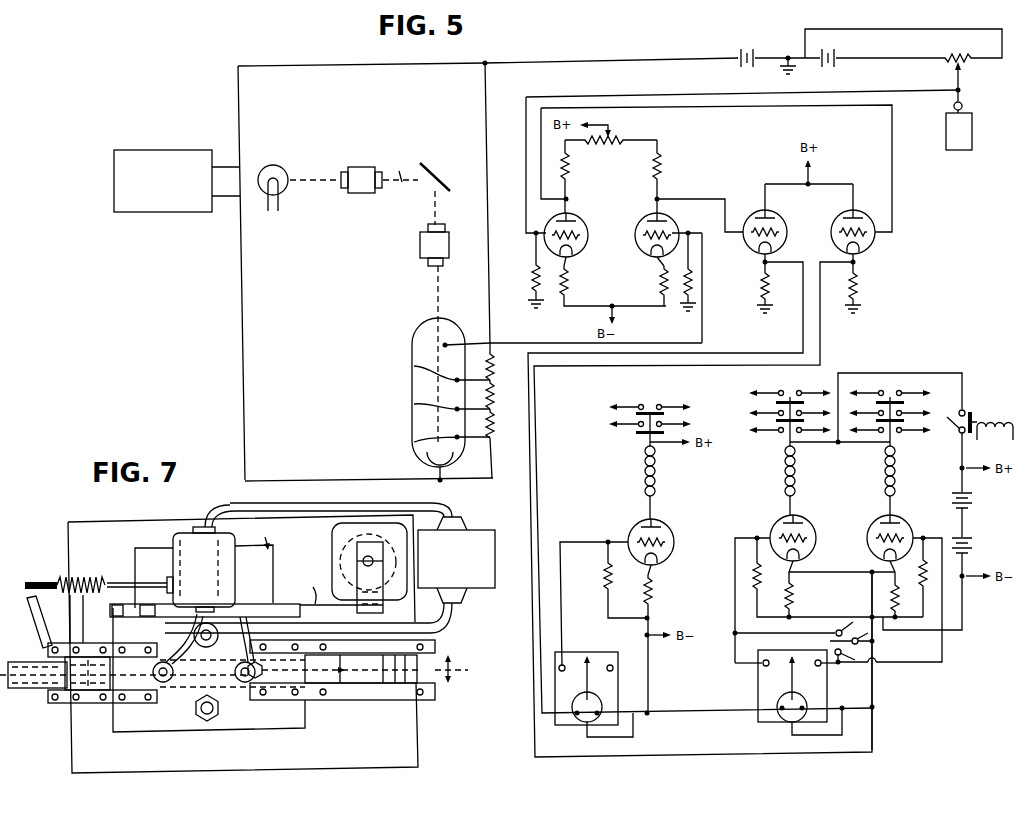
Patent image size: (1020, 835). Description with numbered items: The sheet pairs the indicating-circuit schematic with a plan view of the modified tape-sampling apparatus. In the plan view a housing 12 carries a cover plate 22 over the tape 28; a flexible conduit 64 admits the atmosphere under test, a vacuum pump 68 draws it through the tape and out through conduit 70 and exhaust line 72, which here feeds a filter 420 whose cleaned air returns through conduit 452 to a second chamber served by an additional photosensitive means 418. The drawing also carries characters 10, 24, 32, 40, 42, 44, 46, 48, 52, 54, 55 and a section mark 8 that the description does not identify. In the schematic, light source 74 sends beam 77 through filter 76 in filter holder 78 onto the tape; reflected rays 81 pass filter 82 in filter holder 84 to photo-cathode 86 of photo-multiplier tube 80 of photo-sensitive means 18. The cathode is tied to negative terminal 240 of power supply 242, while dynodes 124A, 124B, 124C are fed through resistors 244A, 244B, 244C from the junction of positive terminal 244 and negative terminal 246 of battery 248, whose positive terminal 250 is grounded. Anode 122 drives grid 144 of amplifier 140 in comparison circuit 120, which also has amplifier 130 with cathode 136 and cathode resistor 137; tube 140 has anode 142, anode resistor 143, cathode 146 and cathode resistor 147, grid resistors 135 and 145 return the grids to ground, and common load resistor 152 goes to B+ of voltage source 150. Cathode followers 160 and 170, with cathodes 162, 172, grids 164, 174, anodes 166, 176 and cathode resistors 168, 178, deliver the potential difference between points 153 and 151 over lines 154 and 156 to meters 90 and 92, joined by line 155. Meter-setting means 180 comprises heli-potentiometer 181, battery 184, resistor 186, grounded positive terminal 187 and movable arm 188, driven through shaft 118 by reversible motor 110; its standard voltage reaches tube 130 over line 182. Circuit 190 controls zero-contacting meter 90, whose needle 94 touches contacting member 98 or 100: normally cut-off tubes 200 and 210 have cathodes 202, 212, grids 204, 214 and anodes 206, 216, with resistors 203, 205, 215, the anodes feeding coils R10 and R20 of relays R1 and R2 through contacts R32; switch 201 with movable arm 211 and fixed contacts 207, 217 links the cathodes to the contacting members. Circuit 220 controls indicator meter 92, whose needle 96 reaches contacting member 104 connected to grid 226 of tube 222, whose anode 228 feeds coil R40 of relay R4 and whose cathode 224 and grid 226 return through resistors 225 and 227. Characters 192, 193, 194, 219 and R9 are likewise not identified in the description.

In FIG. 7, the apparatus 10 is at (66, 745).
In FIG. 7, the housing 12 is at (148, 733).
In FIG. 5, the photo-sensitive means 18 is at (412, 399).
In FIG. 7, the photo-sensitive means 18 is at (133, 563).
In FIG. 7, the cover plate 22 is at (240, 722).
In FIG. 7, the clamp plate 24 is at (430, 684).
In FIG. 5, the tape 28 is at (432, 163).
In FIG. 7, the tape 28 is at (34, 693).
In FIG. 7, the clamp block 32 is at (72, 692).
In FIG. 7, the housing 40 is at (337, 543).
In FIG. 7, the solenoid 42 is at (206, 560).
In FIG. 7, the plate 44 is at (376, 583).
In FIG. 7, the pivot 46 is at (370, 555).
In FIG. 7, the lead wire 48 is at (311, 589).
In FIG. 7, the spring 52 is at (62, 577).
In FIG. 7, the shaft 54 is at (35, 582).
In FIG. 7, the rods 55 is at (72, 606).
In FIG. 7, the flexible conduit 64 is at (33, 612).
In FIG. 7, the vacuum pump 68 is at (186, 532).
In FIG. 7, the conduit 70 is at (166, 636).
In FIG. 7, the exhaust conduit 72 is at (296, 503).
In FIG. 5, the light source 74 is at (277, 166).
In FIG. 5, the filter 76 is at (381, 190).
In FIG. 5, the beam 77 is at (401, 169).
In FIG. 5, the filter holder 78 is at (363, 193).
In FIG. 5, the photo-multiplier tube 80 is at (411, 428).
In FIG. 5, the reflected light rays 81 is at (436, 210).
In FIG. 5, the filter 82 is at (428, 229).
In FIG. 5, the filter holder 84 is at (420, 249).
In FIG. 5, the photo-cathode 86 is at (427, 455).
In FIG. 5, the zero-center micro-ammeter 90 is at (757, 690).
In FIG. 5, the indicator meter 92 is at (608, 654).
In FIG. 5, the indicator needle 94 is at (796, 680).
In FIG. 5, the indicator needle 96 is at (590, 682).
In FIG. 5, the contacting member 98 is at (823, 668).
In FIG. 5, the contacting member 100 is at (763, 667).
In FIG. 5, the contacting member 104 is at (565, 665).
In FIG. 5, the reversible motor 110 is at (966, 144).
In FIG. 5, the shaft 118 is at (964, 112).
In FIG. 5, the comparison circuit 120 is at (910, 250).
In FIG. 5, the anode 122 is at (445, 345).
In FIG. 5, the dynode 124A is at (414, 441).
In FIG. 5, the dynode 124B is at (414, 405).
In FIG. 5, the dynode 124C is at (414, 364).
In FIG. 5, the amplifier 130 is at (585, 218).
In FIG. 5, the grid resistor 135 is at (531, 278).
In FIG. 5, the cathode 136 is at (567, 266).
In FIG. 5, the cathode resistor 137 is at (570, 290).
In FIG. 5, the amplifier 140 is at (650, 253).
In FIG. 5, the anode 142 is at (651, 212).
In FIG. 5, the anode resistor 143 is at (655, 166).
In FIG. 5, the control grid 144 is at (650, 240).
In FIG. 5, the grid resistor 145 is at (684, 305).
In FIG. 5, the cathode 146 is at (662, 275).
In FIG. 5, the cathode resistor 147 is at (662, 291).
In FIG. 5, the source of voltage 150 is at (975, 531).
In FIG. 5, the point 151 is at (857, 266).
In FIG. 5, the common load resistor 152 is at (629, 138).
In FIG. 5, the point 153 is at (762, 268).
In FIG. 5, the line 154 is at (803, 333).
In FIG. 5, the line 155 is at (690, 712).
In FIG. 5, the line 156 is at (822, 333).
In FIG. 5, the cathode follower 160 is at (762, 214).
In FIG. 5, the cathode 162 is at (760, 259).
In FIG. 5, the control grid 164 is at (744, 236).
In FIG. 5, the anode 166 is at (778, 217).
In FIG. 5, the cathode resistor 168 is at (760, 292).
In FIG. 5, the cathode follower 170 is at (846, 214).
In FIG. 5, the cathode 172 is at (868, 259).
In FIG. 5, the control grid 174 is at (870, 242).
In FIG. 5, the anode 176 is at (860, 217).
In FIG. 5, the cathode resistor 178 is at (866, 287).
In FIG. 5, the meter-setting means 180 is at (953, 93).
In FIG. 5, the heli-potentiometer 181 is at (966, 69).
In FIG. 5, the line 182 is at (526, 176).
In FIG. 5, the source of voltage 184 is at (845, 55).
In FIG. 5, the resistor 186 is at (945, 56).
In FIG. 5, the positive terminal 187 is at (865, 70).
In FIG. 5, the movable arm 188 is at (955, 84).
In FIG. 5, the circuit 190 is at (972, 381).
In FIG. 5, the plate 192 is at (572, 211).
In FIG. 5, the resistor 193 is at (569, 160).
In FIG. 5, the grid 194 is at (587, 233).
In FIG. 5, the tube 200 is at (772, 524).
In FIG. 5, the single pole double throw switch 201 is at (828, 642).
In FIG. 5, the cathode 202 is at (806, 570).
In FIG. 5, the resistor 203 is at (800, 596).
In FIG. 5, the grid 204 is at (816, 537).
In FIG. 5, the resistor 205 is at (754, 586).
In FIG. 5, the anode 206 is at (806, 520).
In FIG. 5, the fixed contact 207 is at (875, 652).
In FIG. 5, the tube 210 is at (905, 521).
In FIG. 5, the movable arm 211 is at (855, 625).
In FIG. 5, the cathode 212 is at (877, 573).
In FIG. 5, the grid 214 is at (871, 542).
In FIG. 5, the resistor 215 is at (932, 549).
In FIG. 5, the anode 216 is at (880, 520).
In FIG. 5, the fixed contact 217 is at (834, 632).
In FIG. 5, the resistor 219 is at (892, 590).
In FIG. 5, the circuit 220 is at (707, 423).
In FIG. 5, the tube 222 is at (670, 528).
In FIG. 5, the cathode 224 is at (656, 569).
In FIG. 5, the resistor 225 is at (655, 601).
In FIG. 5, the grid 226 is at (675, 545).
In FIG. 5, the resistor 227 is at (605, 584).
In FIG. 5, the anode 228 is at (645, 526).
In FIG. 5, the negative terminal 240 is at (245, 323).
In FIG. 5, the power source 242 is at (162, 218).
In FIG. 5, the positive terminal 244 is at (239, 137).
In FIG. 5, the resistor 244A is at (496, 420).
In FIG. 5, the resistor 244B is at (494, 391).
In FIG. 5, the resistor 244C is at (494, 362).
In FIG. 5, the negative terminal 246 is at (742, 69).
In FIG. 5, the battery 248 is at (752, 46).
In FIG. 5, the positive terminal 250 is at (749, 67).
In FIG. 7, the photosensitive means 418 is at (269, 535).
In FIG. 7, the filter 420 is at (470, 569).
In FIG. 7, the conduit 452 is at (458, 620).
In FIG. 7, the section line 8 is at (231, 666).
In FIG. 5, the relay R1 is at (786, 471).
In FIG. 5, the relay R2 is at (905, 471).
In FIG. 5, the relay R4 is at (658, 470).
In FIG. 5, the relay R9 is at (1001, 413).
In FIG. 5, the relay coil R10 is at (787, 478).
In FIG. 5, the relay coil R20 is at (906, 471).
In FIG. 5, the relay contacts R32 is at (948, 431).
In FIG. 5, the relay coil R40 is at (643, 482).